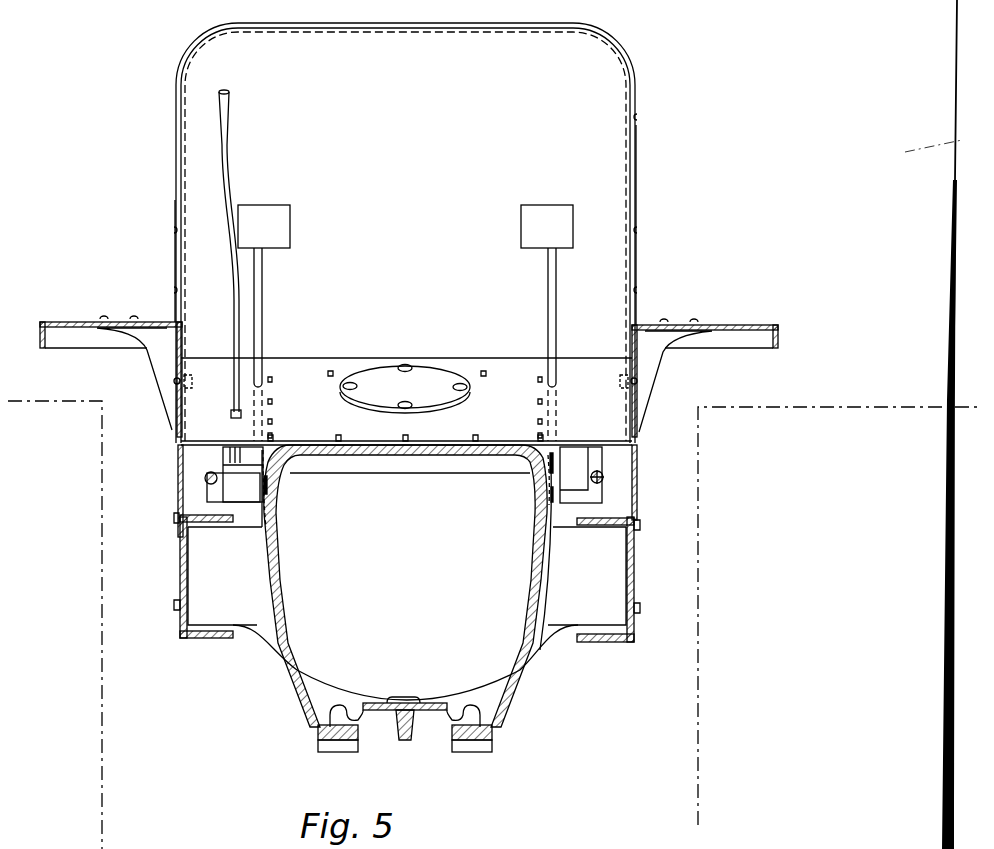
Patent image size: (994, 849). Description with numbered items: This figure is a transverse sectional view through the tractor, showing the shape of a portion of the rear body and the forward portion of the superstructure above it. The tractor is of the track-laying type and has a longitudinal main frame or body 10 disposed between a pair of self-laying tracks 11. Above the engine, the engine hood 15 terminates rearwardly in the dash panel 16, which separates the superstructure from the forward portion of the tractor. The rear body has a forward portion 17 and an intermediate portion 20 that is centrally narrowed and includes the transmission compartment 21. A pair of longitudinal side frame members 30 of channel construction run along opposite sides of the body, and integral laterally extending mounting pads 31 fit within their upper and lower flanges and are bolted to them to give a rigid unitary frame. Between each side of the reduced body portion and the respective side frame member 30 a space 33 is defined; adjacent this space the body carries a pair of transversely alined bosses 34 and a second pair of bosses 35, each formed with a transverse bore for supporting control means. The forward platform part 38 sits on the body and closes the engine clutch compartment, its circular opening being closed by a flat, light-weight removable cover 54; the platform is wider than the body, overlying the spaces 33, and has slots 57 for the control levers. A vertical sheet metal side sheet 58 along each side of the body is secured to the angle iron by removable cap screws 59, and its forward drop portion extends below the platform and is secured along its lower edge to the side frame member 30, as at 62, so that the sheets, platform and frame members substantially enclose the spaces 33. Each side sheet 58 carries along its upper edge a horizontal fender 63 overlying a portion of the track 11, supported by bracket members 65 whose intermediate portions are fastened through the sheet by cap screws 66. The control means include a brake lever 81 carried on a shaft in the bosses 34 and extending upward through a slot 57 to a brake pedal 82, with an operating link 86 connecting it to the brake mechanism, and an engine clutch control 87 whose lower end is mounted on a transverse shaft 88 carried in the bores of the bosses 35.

The main frame or body 10 is at (557, 722).
The self-laying tracks 11 is at (95, 705).
The engine hood 15 is at (630, 48).
The dash panel 16 is at (620, 148).
The forward portion of the rear body part 17 is at (555, 545).
The intermediate portion of the rear body part 20 is at (300, 705).
The transmission compartment 21 is at (402, 605).
The side frame members 30 is at (180, 566).
The mounting pads 31 is at (233, 617).
The space 33 is at (248, 513).
The bosses 34 is at (272, 452).
The bosses 35 is at (268, 490).
The forward platform part 38 is at (405, 365).
The cover 54 is at (470, 389).
The slots or openings 57 is at (265, 358).
The side sheet 58 is at (176, 470).
The cap screws 59 is at (173, 430).
The securing means 62 is at (178, 518).
The fender 63 is at (138, 322).
The bracket members 65 is at (167, 350).
The cap screws 66 is at (172, 383).
The brake lever part 81 is at (262, 287).
The brake pedal 82 is at (290, 221).
The operating link 86 is at (205, 478).
The engine clutch control 87 is at (228, 120).
The transverse shaft 88 is at (243, 462).